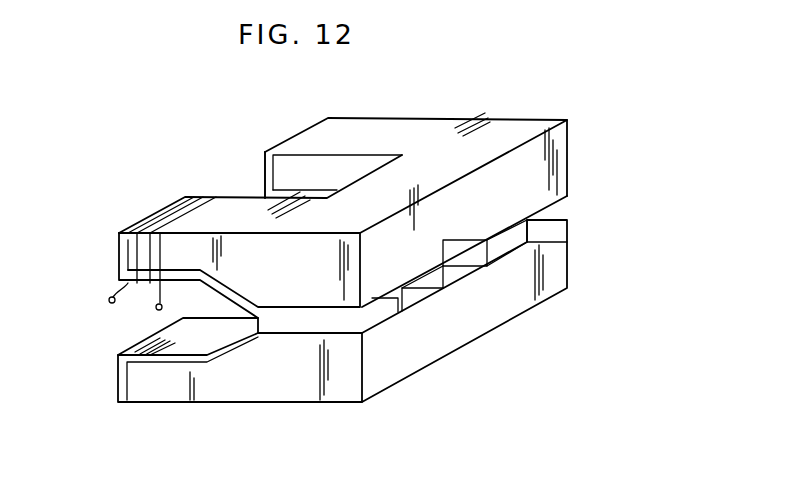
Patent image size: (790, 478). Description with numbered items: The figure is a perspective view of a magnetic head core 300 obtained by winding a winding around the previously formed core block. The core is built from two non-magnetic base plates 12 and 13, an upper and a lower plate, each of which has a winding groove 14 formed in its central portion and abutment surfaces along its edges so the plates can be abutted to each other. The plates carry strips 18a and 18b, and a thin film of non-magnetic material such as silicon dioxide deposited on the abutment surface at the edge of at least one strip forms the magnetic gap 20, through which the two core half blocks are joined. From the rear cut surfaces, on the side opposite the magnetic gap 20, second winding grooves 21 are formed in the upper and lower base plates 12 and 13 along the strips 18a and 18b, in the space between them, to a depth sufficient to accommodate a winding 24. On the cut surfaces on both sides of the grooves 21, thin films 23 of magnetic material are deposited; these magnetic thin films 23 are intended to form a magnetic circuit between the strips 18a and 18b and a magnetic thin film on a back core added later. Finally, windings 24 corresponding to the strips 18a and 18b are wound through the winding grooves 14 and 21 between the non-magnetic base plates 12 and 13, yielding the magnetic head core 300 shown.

The magnetic head core 300 is at (378, 117).
The non-magnetic base plate 12 is at (520, 132).
The non-magnetic base plate 13 is at (312, 403).
The winding groove 14 is at (197, 328).
The strip 18a is at (408, 285).
The strip 18b is at (530, 234).
The magnetic gap 20 is at (503, 243).
The second winding groove 21 is at (257, 190).
The magnetic thin film 23 is at (293, 134).
The winding 24 is at (156, 309).